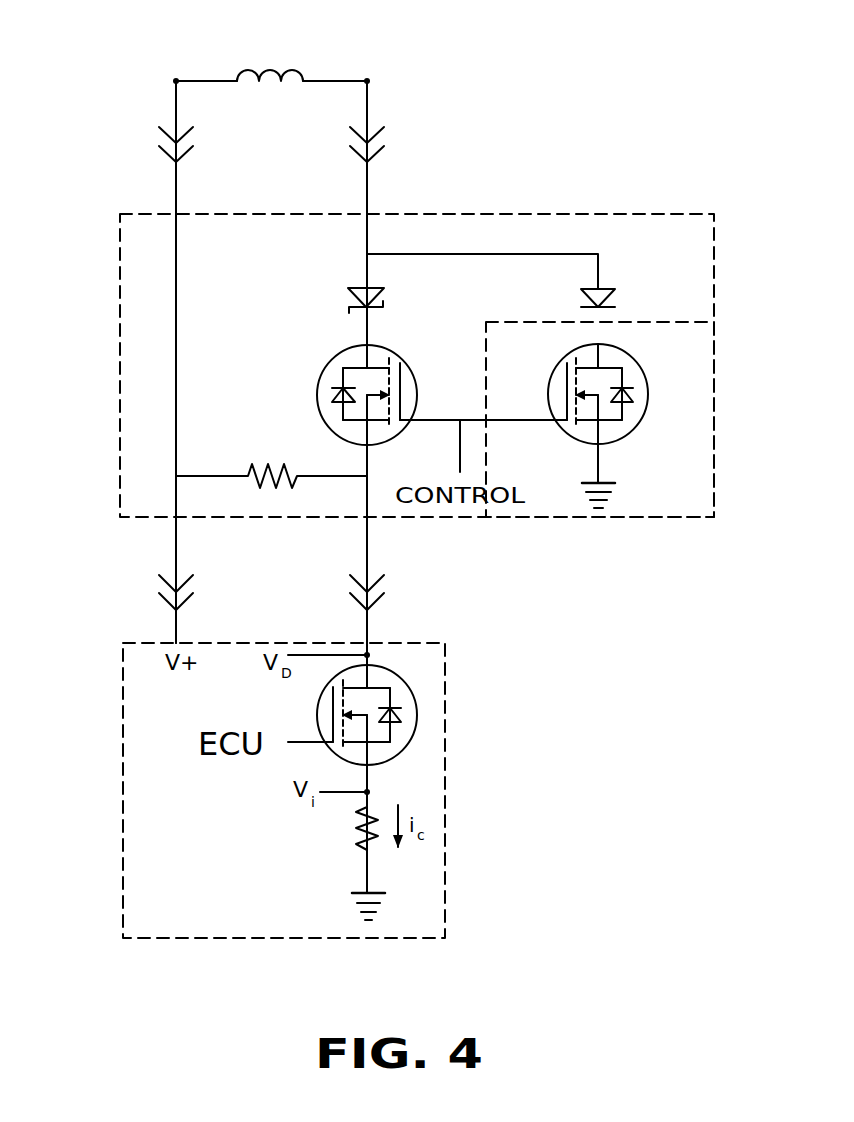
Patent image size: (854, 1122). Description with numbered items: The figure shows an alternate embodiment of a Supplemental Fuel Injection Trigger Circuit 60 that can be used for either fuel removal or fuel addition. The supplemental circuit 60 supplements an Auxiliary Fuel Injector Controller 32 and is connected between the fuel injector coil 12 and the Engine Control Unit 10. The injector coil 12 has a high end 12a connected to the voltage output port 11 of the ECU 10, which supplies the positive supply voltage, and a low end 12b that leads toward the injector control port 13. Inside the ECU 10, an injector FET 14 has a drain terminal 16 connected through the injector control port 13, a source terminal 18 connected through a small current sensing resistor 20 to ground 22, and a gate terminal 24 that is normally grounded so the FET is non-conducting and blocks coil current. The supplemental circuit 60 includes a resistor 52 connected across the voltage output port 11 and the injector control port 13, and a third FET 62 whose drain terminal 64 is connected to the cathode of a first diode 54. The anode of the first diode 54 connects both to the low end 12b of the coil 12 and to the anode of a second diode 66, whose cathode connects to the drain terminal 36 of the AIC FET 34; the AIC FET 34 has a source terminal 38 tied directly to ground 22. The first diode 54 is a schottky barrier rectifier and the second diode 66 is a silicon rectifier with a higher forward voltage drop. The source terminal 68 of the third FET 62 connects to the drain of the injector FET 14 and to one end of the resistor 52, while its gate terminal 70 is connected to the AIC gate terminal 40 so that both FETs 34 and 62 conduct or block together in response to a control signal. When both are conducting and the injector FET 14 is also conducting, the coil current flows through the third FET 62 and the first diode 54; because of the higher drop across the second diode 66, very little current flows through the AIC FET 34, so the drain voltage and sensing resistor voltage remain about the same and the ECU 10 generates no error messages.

The Engine Control Unit 10 is at (123, 783).
The voltage output port 11 is at (176, 643).
The fuel injector coil 12 is at (262, 93).
The high end of fuel injector coil 12a is at (176, 81).
The low end of fuel injector coil 12b is at (367, 81).
The injector control port 13 is at (367, 643).
The injector Field Effect Transistor 14 is at (418, 713).
The drain terminal 16 is at (362, 660).
The source terminal 18 is at (368, 765).
The current sensing resistor 20 is at (345, 828).
The ground 22 is at (620, 493).
The gate terminal 24 is at (328, 742).
The Auxiliary Fuel Injector Controller 32 is at (572, 518).
The second FET 34 is at (648, 393).
The drain terminal 36 is at (598, 342).
The source terminal 38 is at (598, 446).
The gate terminal 40 is at (560, 422).
The resistor 52 is at (262, 452).
The first diode 54 is at (350, 286).
The Supplemental Fuel Injection Trigger Circuit 60 is at (518, 214).
The third FET 62 is at (320, 372).
The drain terminal 64 is at (367, 345).
The second diode 66 is at (618, 280).
The source terminal 68 is at (367, 447).
The gate terminal 70 is at (418, 418).